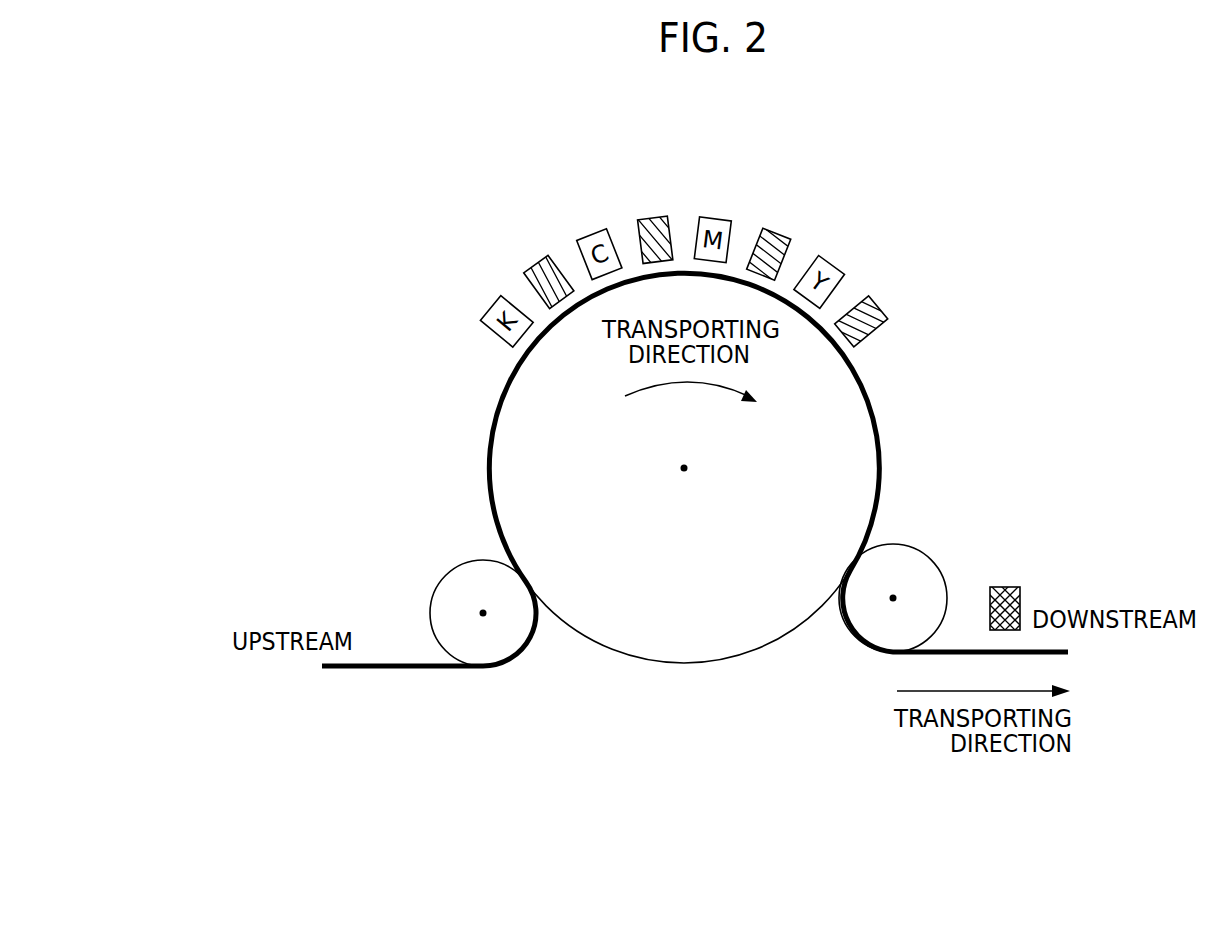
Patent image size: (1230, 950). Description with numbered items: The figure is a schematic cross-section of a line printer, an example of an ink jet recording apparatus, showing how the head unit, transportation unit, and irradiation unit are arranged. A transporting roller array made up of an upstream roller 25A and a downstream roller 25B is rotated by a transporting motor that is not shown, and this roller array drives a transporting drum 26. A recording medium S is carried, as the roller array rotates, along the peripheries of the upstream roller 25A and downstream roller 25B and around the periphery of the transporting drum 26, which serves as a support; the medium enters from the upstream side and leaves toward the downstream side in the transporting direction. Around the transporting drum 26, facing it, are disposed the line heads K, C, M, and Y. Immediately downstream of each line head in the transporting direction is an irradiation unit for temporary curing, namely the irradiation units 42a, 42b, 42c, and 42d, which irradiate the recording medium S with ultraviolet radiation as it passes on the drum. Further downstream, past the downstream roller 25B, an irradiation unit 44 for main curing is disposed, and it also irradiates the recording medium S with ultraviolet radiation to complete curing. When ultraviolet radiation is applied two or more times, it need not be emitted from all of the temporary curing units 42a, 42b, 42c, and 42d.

The transporting drum 26 is at (628, 650).
The upstream roller 25A is at (455, 580).
The downstream roller 25B is at (912, 553).
The recording medium S is at (400, 664).
The irradiation unit for temporary curing 42a is at (535, 268).
The irradiation unit for temporary curing 42b is at (645, 220).
The irradiation unit for temporary curing 42c is at (771, 229).
The irradiation unit for temporary curing 42d is at (877, 297).
The irradiation unit for main curing 44 is at (1001, 587).